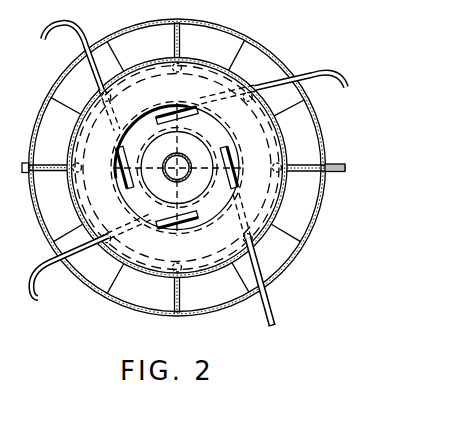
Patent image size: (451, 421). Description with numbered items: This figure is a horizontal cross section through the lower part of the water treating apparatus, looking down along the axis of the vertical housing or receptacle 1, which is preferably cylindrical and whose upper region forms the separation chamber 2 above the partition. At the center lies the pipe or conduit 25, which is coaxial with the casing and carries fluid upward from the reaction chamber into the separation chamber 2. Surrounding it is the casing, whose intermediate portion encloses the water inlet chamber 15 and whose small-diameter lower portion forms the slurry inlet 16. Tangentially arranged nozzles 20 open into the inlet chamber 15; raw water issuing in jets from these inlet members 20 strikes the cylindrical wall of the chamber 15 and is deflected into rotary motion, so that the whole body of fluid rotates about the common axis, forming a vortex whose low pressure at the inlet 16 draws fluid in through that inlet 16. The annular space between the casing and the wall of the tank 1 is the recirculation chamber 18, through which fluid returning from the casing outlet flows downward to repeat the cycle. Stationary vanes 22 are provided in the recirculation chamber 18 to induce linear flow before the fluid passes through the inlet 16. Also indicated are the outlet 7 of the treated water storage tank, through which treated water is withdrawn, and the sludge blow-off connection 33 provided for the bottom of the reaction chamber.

The housing or receptacle 1 is at (210, 20).
The recirculation chamber 18 is at (152, 52).
The stationary vanes 22 is at (181, 41).
The sludge blow-off connection 33 is at (230, 82).
The tangentially arranged nozzles 20 is at (186, 123).
The water inlet chamber 15 is at (222, 146).
The slurry inlet 16 is at (200, 162).
The pipe or conduit 25 is at (186, 179).
The outlet 7 is at (60, 77).
The upper separation chamber 2 is at (152, 167).